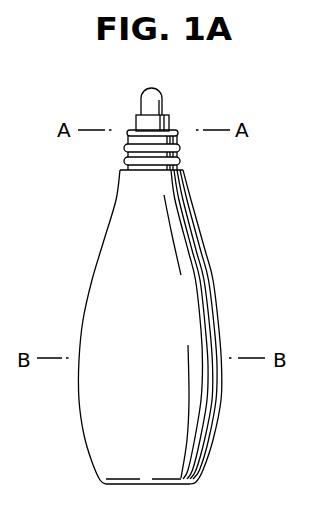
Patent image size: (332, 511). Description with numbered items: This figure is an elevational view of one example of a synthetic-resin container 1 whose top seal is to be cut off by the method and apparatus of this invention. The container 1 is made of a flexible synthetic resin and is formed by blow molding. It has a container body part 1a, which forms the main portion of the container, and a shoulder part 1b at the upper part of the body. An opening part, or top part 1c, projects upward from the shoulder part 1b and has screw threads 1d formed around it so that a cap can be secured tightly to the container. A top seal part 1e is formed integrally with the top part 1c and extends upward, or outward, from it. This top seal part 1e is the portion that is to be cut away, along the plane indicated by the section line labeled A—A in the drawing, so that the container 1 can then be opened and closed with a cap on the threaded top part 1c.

The synthetic-resin container 1 is at (198, 252).
The container body part 1a is at (208, 420).
The shoulder part 1b is at (182, 165).
The top part 1c is at (128, 137).
The screw threads 1d is at (177, 147).
The top seal part 1e is at (153, 119).